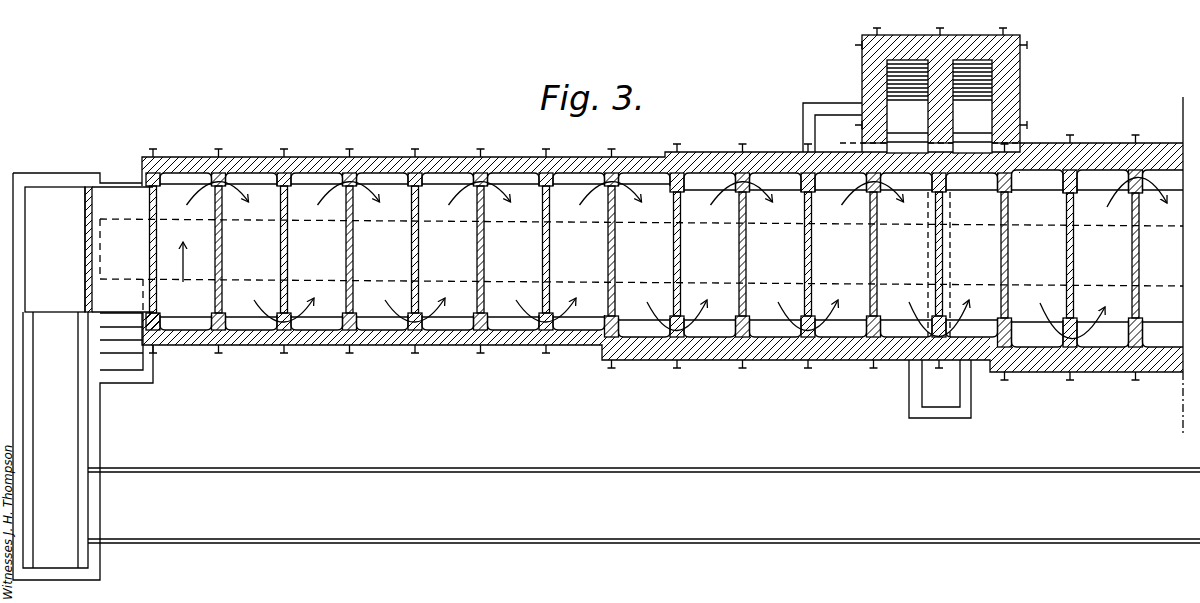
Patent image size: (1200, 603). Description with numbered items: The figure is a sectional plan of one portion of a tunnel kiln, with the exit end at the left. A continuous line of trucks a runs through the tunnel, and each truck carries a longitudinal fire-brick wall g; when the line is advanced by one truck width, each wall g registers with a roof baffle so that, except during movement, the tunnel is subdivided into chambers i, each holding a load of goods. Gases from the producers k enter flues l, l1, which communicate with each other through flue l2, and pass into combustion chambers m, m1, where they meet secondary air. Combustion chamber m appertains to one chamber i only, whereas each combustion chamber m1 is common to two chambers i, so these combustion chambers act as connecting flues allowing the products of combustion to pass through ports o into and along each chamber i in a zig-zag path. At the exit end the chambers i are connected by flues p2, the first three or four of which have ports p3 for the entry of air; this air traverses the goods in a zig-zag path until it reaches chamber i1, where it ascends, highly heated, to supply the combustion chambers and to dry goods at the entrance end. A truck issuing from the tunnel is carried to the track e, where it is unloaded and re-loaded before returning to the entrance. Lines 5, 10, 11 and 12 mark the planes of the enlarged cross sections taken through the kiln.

The section line 10— 10 is at (185, 156).
The section line 11— 11 is at (580, 166).
The section line 12— 12 is at (980, 187).
The section line 5— 5 is at (1048, 190).
The flue p2 is at (240, 172).
The port p3 is at (140, 168).
The chamber i is at (664, 258).
The chamber i1 is at (973, 266).
The flue l is at (1095, 166).
The flue l1 is at (1088, 347).
The flue l2 is at (925, 245).
The combustion chamber m is at (1068, 166).
The combustion chamber m1 is at (1118, 170).
The producer k is at (933, 90).
The port o is at (1035, 189).
The truck a is at (628, 302).
The fire-brick wall g is at (746, 283).
The track e is at (790, 478).